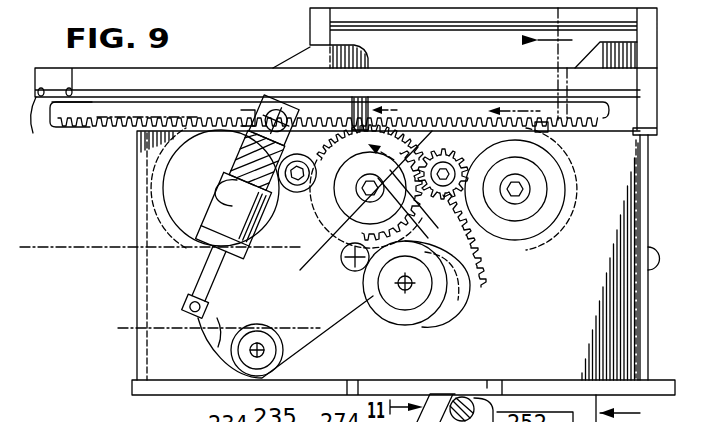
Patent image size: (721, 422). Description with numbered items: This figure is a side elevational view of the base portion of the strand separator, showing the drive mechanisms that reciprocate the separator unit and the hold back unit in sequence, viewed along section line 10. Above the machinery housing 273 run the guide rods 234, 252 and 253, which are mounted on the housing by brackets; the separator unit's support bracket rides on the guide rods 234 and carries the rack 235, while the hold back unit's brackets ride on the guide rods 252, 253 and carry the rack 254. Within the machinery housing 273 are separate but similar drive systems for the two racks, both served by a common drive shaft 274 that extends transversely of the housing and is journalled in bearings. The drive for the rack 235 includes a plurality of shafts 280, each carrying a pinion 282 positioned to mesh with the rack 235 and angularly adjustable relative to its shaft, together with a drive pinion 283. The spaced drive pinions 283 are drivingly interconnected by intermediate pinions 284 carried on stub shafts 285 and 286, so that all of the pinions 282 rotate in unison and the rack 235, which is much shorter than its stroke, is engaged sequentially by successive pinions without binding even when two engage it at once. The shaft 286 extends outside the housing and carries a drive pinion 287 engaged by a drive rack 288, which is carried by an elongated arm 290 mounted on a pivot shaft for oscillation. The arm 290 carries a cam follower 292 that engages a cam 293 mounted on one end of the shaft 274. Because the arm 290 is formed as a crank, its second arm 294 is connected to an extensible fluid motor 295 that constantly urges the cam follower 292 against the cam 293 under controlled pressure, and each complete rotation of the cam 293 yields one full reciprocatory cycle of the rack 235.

The guide rods 234 is at (273, 70).
The guide rod 252 is at (384, 31).
The section line 10- 10 is at (577, 215).
The guide rod 253 is at (88, 133).
The rack 235 is at (327, 147).
The drive pinion 283 is at (178, 183).
The pinion 282 is at (178, 207).
The shaft 280 is at (237, 160).
The extensible fluid motor 295 is at (191, 281).
The stub shaft 285 is at (366, 173).
The stub shaft 286 is at (393, 169).
The drive pinion 287 is at (497, 178).
The rack 254 is at (601, 138).
The intermediate pinion 284 is at (505, 262).
The drive rack 288 is at (488, 289).
The machinery housing 273 is at (660, 272).
The cam follower 292 is at (405, 306).
The drive shaft 274 is at (443, 313).
The cam 293 is at (440, 335).
The elongated arm 290 is at (305, 348).
The second arm 294 is at (192, 318).